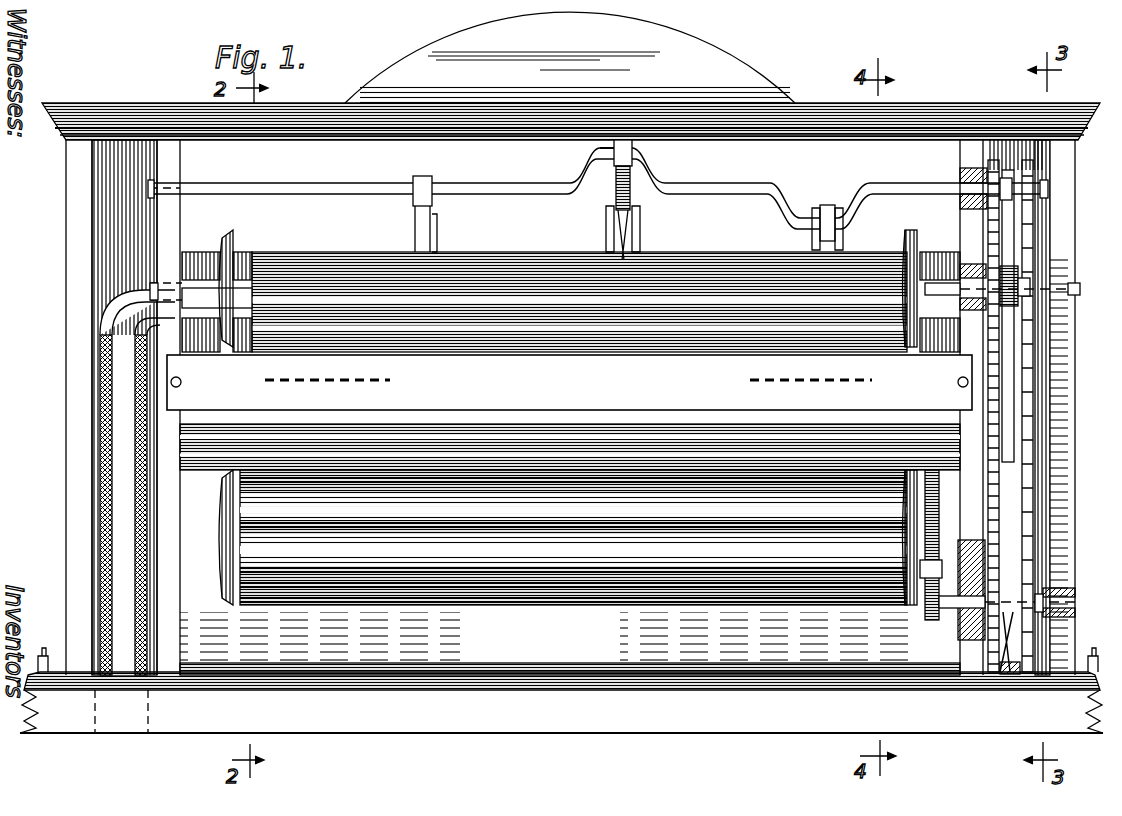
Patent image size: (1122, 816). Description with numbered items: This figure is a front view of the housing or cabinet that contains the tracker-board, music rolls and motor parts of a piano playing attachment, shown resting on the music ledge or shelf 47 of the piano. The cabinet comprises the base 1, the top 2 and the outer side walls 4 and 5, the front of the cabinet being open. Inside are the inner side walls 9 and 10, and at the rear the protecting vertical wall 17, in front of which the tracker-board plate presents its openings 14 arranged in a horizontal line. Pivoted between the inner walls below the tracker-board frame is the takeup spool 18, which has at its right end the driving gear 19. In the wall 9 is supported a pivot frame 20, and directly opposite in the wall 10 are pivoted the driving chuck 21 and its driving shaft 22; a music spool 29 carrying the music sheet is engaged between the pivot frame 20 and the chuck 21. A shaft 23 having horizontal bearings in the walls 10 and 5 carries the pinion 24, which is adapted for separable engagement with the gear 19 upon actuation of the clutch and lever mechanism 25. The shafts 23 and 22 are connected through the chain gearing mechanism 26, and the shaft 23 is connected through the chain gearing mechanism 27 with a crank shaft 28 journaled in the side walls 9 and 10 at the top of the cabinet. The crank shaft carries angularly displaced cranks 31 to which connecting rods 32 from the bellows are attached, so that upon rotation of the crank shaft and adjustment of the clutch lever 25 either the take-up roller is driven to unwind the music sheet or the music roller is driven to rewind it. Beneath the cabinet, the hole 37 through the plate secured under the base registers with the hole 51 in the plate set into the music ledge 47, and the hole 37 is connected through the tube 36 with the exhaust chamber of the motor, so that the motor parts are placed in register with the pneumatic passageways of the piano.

The base 1 is at (545, 687).
The top 2 is at (105, 104).
The outer side wall 4 is at (76, 510).
The outer side wall 5 is at (1060, 504).
The inner side wall 9 is at (170, 665).
The inner side wall 10 is at (968, 482).
The openings 14 is at (752, 364).
The protecting vertical wall 17 is at (805, 356).
The takeup spool 18 is at (795, 516).
The driving gear 19 is at (1040, 566).
The pivot frame 20 is at (192, 255).
The driving chuck 21 is at (945, 256).
The driving shaft 22 is at (1030, 280).
The shaft 23 is at (1063, 603).
The pinion 24 is at (934, 616).
The clutch and lever mechanism 25 is at (1003, 672).
The chain gearing mechanism 26 is at (1030, 405).
The chain gearing mechanism 27 is at (1000, 358).
The crank shaft 28 is at (893, 192).
The spool 29 is at (497, 276).
The cranks 31 is at (648, 164).
The connecting rods 32 is at (630, 196).
The tube 36 is at (116, 387).
The hole 37 is at (95, 680).
The music ledge or shelf 47 is at (625, 722).
The hole 51 is at (148, 680).